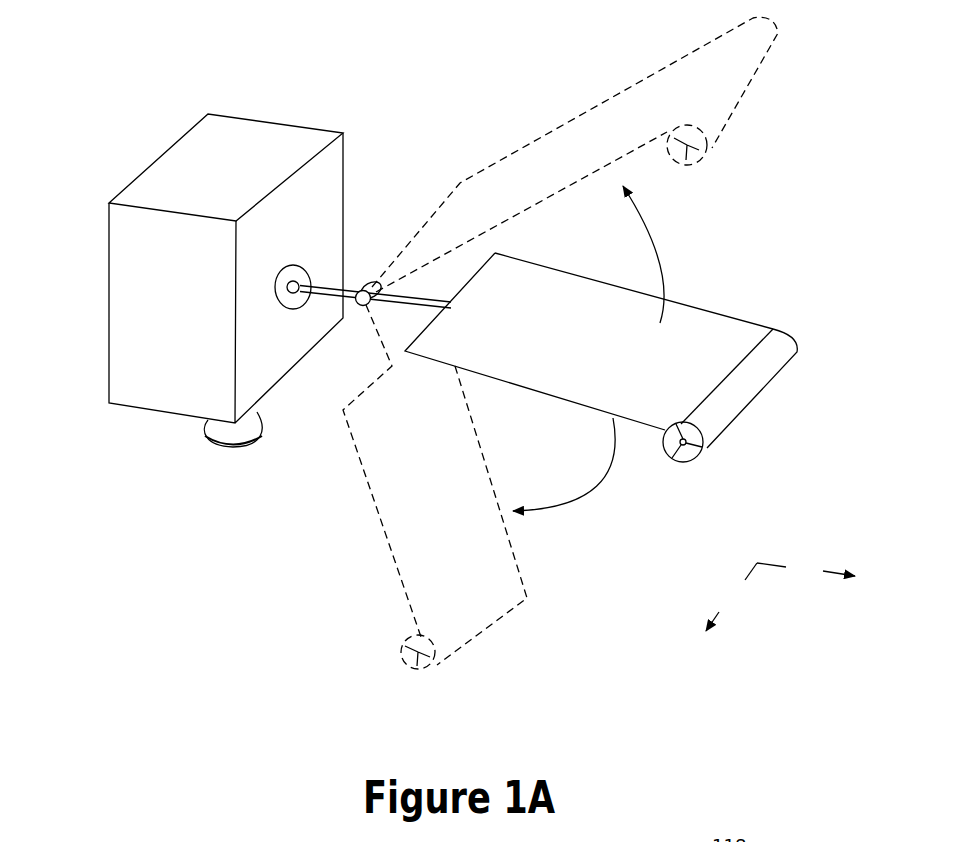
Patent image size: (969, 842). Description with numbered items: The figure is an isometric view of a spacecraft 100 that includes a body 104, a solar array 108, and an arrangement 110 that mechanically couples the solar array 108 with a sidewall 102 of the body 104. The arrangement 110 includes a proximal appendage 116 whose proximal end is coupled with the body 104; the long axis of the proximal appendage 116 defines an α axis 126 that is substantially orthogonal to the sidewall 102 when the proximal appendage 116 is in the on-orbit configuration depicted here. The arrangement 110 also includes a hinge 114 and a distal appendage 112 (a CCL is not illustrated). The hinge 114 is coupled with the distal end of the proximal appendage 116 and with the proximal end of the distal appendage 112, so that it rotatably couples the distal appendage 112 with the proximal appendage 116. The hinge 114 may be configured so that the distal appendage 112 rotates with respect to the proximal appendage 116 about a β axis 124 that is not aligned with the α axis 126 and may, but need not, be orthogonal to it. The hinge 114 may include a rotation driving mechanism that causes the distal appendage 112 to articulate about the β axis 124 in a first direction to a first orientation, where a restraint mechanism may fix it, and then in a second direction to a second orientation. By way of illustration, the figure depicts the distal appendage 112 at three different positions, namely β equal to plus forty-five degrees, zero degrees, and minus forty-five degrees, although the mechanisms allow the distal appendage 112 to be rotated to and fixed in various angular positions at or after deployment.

The spacecraft 100 is at (191, 52).
The sidewall 102 is at (313, 222).
The body 104 is at (225, 133).
The solar array 108 is at (718, 88).
The arrangement 110 is at (356, 256).
The distal appendage 112 is at (418, 310).
The hinge 114 is at (360, 304).
The proximal appendage 116 is at (342, 293).
The β axis 124 is at (731, 597).
The α axis 126 is at (806, 572).